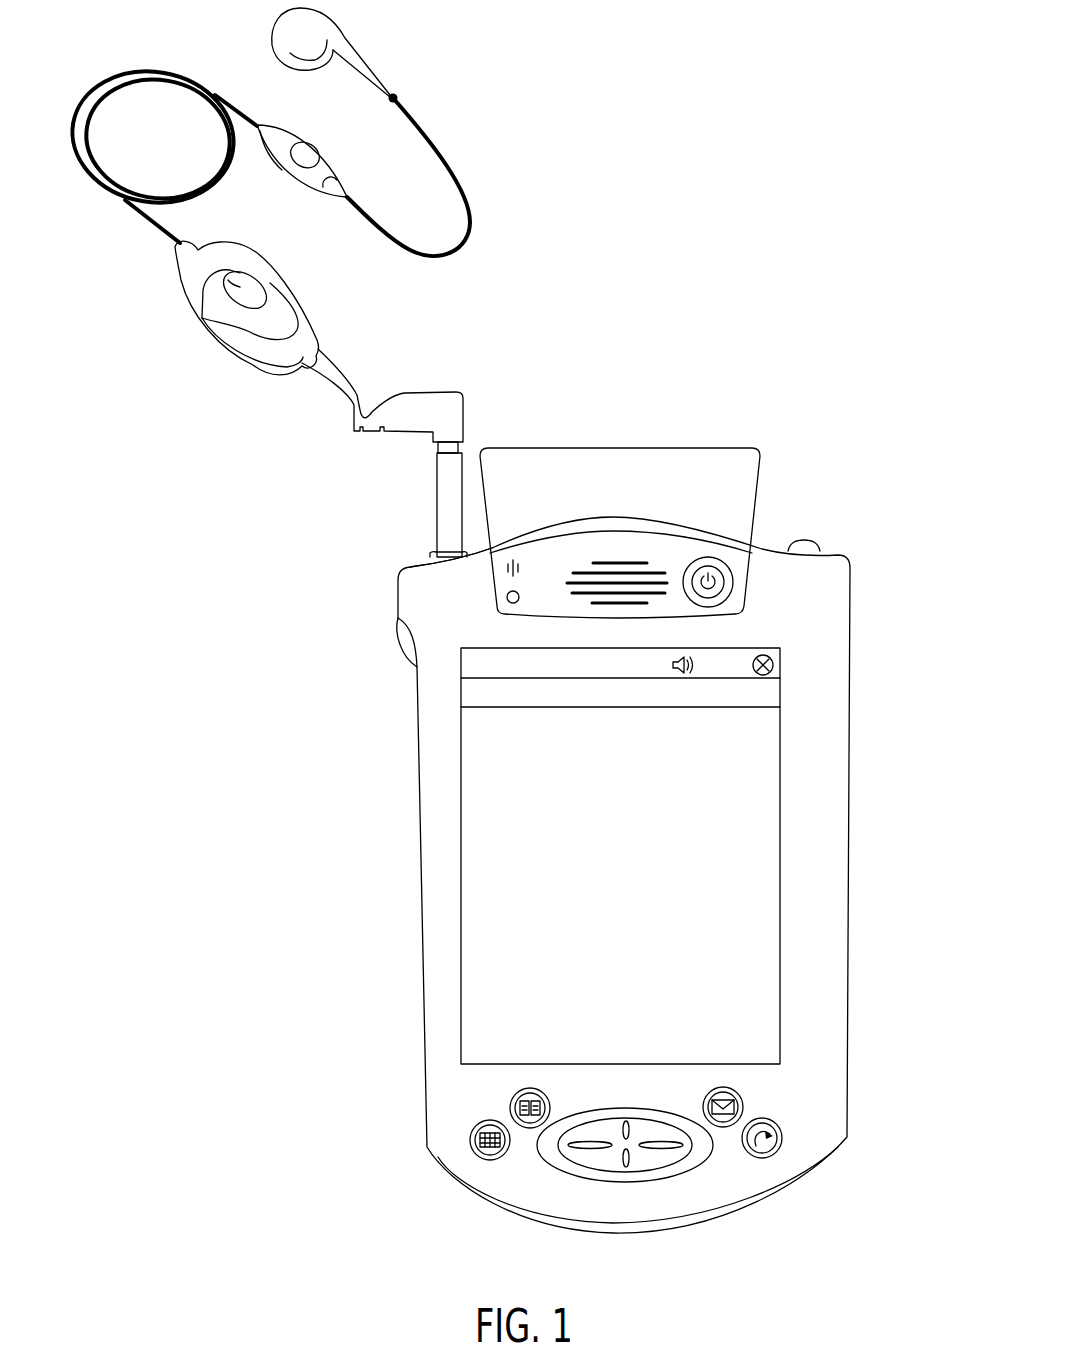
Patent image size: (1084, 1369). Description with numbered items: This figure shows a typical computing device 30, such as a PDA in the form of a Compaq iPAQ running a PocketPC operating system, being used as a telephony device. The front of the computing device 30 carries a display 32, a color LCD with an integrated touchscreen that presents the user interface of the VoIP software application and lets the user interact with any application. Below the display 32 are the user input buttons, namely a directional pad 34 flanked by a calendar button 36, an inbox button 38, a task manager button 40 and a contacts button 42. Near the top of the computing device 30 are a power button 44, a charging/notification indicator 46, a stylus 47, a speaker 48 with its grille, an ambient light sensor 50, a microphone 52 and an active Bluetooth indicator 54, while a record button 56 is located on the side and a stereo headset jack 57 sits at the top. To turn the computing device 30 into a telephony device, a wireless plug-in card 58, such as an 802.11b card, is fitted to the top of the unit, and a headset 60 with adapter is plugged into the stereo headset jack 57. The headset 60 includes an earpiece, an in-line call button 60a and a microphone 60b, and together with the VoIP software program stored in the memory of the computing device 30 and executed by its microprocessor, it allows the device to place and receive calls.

The computing device 30 is at (652, 166).
The display 32 is at (622, 941).
The directional pad 34 is at (627, 1182).
The calendar button 36 is at (470, 1143).
The inbox button 38 is at (743, 1099).
The task manager button 40 is at (782, 1135).
The contacts button 42 is at (510, 1104).
The power button 44 is at (720, 574).
The charging/notification indicator 46 is at (753, 576).
The stylus 47 is at (822, 543).
The speaker 48 is at (647, 563).
The ambient light sensor 50 is at (513, 591).
The microphone 52 is at (507, 567).
The active Bluetooth indicator 54 is at (490, 574).
The record button 56 is at (405, 627).
The stereo headset jack 57 is at (432, 555).
The wireless plug-in card 58 is at (620, 480).
The headset 60 is at (150, 364).
The call button 60a is at (243, 288).
The microphone 60b is at (278, 159).